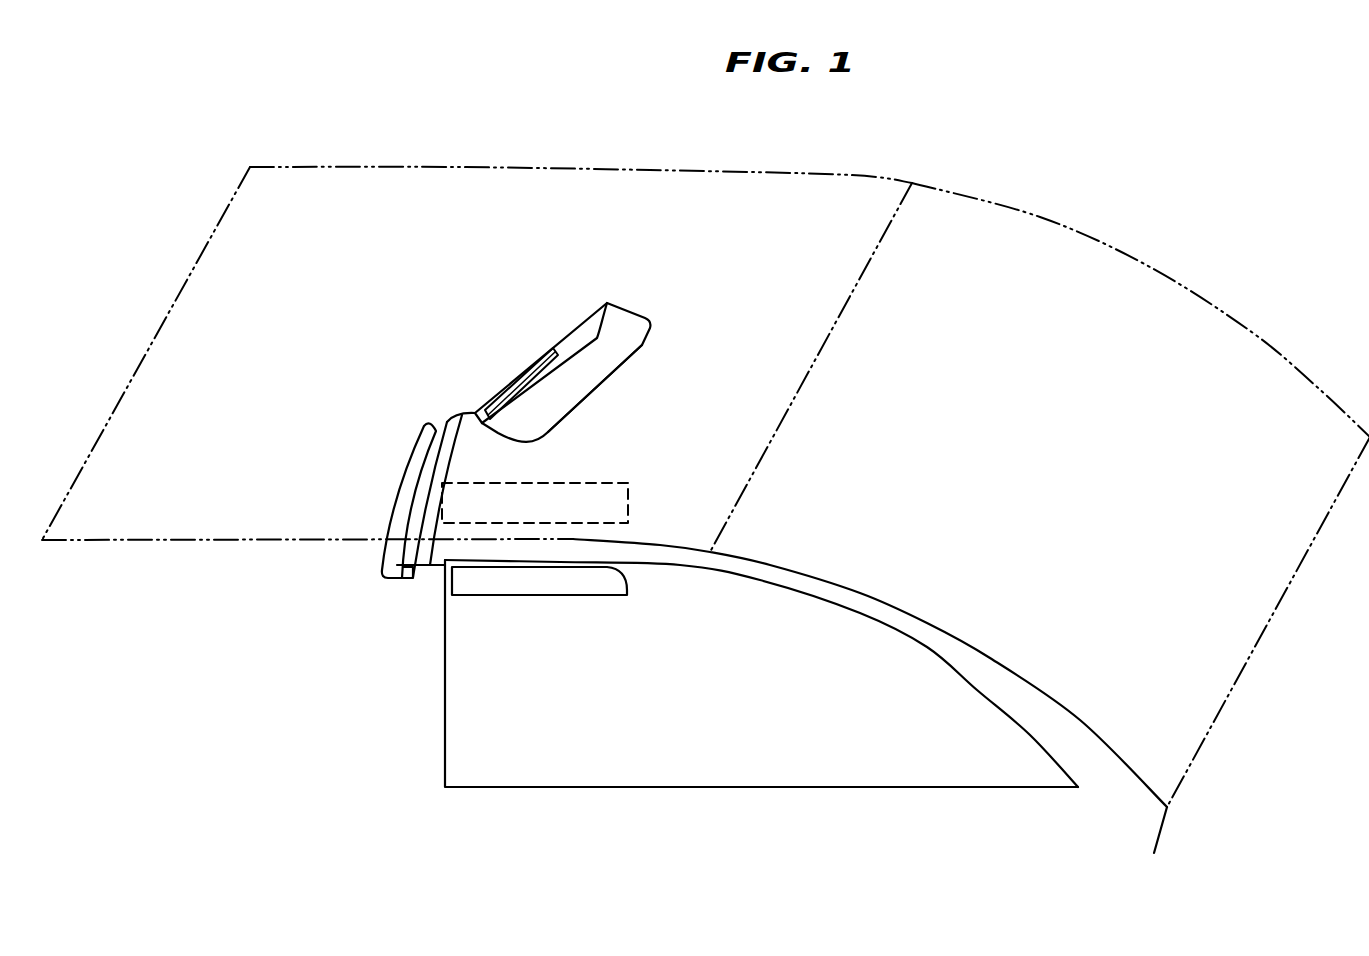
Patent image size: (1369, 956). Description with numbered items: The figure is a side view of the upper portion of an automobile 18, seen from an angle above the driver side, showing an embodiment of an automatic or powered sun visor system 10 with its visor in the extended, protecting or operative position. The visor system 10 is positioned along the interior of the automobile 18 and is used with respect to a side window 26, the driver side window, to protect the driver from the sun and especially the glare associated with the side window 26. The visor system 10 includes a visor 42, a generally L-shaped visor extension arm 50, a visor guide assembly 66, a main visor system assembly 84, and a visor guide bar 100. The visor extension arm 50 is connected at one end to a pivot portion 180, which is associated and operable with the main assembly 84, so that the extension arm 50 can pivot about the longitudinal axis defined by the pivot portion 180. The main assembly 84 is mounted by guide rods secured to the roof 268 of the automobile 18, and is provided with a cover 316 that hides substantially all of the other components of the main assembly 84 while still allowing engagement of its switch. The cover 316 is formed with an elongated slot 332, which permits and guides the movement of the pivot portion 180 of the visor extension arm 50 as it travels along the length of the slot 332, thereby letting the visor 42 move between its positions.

The automatic sun visor system 10 is at (350, 380).
The automobile 18 is at (870, 482).
The side window 26 is at (565, 787).
The visor 42 is at (595, 597).
The visor extension arm 50 is at (458, 420).
The visor guide assembly 66 is at (392, 503).
The main visor system assembly 84 is at (675, 292).
The visor guide bar 100 is at (420, 578).
The pivot portion 180 is at (462, 416).
The roof 268 is at (543, 192).
The cover 316 is at (612, 370).
The elongated slot 332 is at (480, 388).